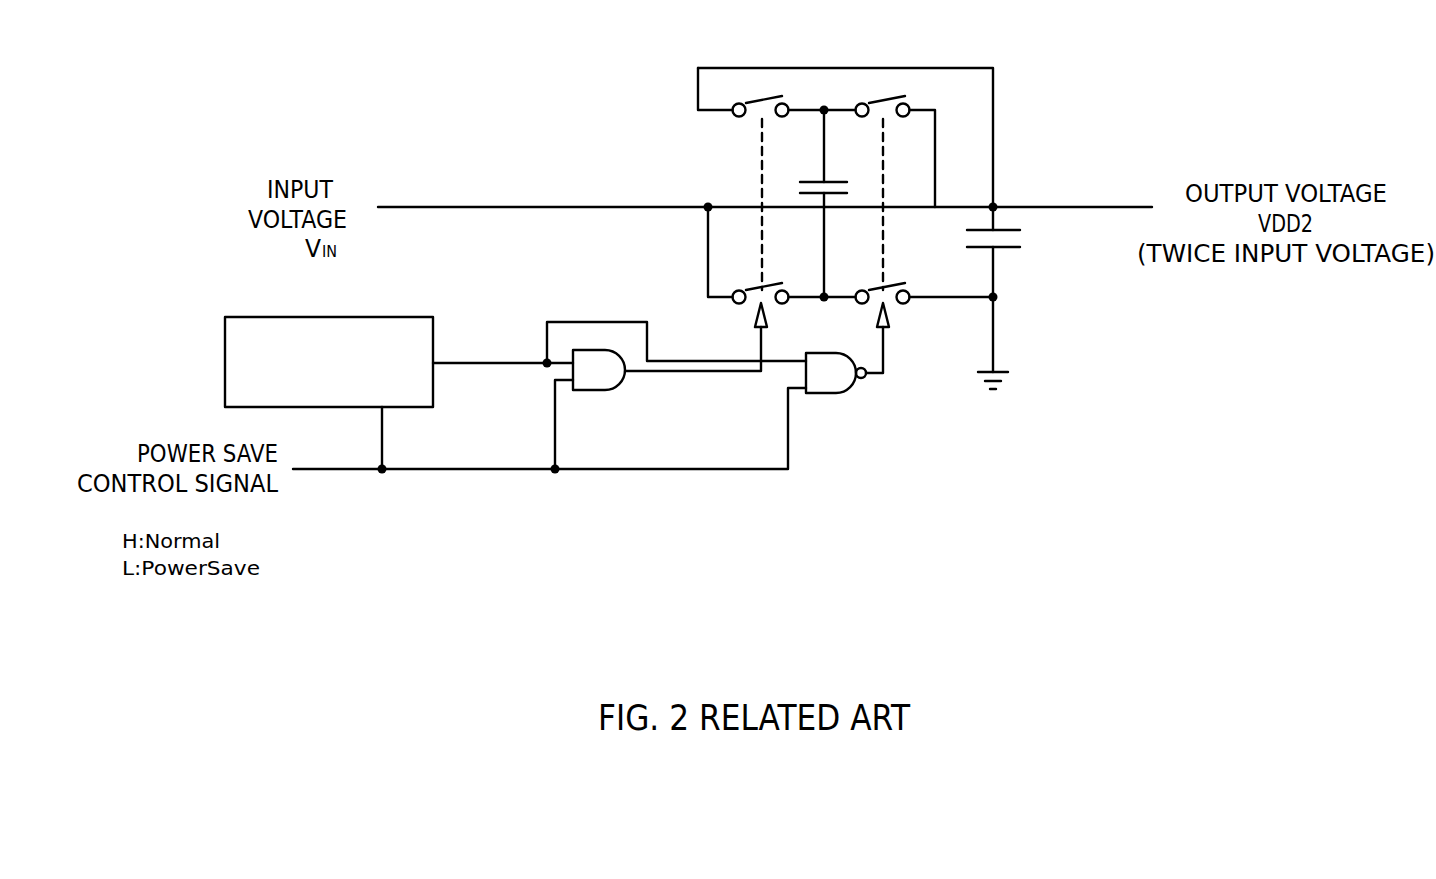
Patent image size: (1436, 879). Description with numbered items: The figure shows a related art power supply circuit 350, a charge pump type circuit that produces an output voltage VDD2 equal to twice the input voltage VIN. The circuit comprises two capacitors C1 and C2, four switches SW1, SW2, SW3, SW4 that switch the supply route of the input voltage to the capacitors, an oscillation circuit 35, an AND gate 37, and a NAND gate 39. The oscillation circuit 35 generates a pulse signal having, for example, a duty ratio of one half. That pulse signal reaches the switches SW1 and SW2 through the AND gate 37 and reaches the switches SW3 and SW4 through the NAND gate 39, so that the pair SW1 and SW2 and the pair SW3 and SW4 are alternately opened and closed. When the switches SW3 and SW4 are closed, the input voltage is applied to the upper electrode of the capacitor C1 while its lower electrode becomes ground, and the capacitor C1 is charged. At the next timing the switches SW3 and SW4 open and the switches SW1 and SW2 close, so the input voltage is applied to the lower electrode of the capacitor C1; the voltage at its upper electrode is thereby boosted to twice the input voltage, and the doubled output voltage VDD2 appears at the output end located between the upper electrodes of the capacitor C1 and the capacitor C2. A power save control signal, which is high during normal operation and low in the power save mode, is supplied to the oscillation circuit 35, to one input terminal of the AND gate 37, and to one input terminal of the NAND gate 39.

The power supply circuit 350 is at (1157, 483).
The oscillation circuit 35 is at (357, 317).
The AND gate 37 is at (620, 389).
The NAND gate 39 is at (850, 392).
The switch SW1 is at (762, 102).
The switch SW2 is at (748, 302).
The switch SW3 is at (885, 102).
The switch SW4 is at (888, 300).
The capacitor C1 is at (812, 181).
The capacitor C2 is at (1007, 247).